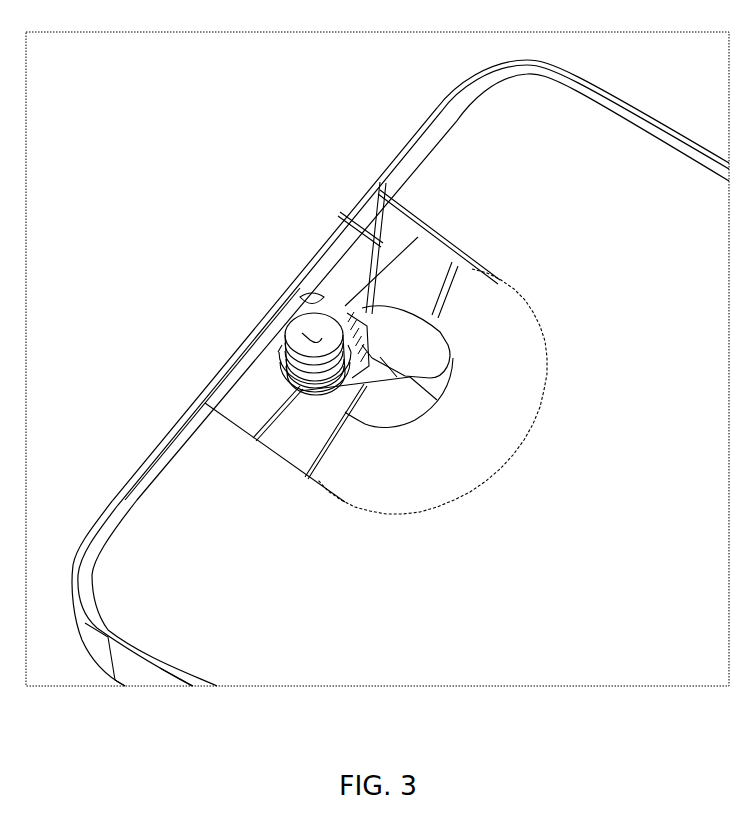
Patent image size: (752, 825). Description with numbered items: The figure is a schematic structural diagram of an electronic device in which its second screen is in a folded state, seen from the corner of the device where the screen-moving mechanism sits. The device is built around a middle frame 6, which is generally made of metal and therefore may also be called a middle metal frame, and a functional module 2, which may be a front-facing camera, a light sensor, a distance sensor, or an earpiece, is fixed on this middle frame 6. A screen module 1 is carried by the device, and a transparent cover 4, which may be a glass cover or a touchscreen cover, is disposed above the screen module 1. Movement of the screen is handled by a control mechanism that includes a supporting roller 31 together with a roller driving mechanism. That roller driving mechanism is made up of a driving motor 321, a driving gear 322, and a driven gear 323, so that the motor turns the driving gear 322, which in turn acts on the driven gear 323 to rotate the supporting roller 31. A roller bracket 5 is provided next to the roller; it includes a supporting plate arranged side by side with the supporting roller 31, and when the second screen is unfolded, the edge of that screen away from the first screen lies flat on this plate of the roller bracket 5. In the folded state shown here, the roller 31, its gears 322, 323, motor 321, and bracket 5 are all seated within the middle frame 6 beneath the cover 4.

The screen module 1 is at (427, 332).
The functional module 2 is at (302, 333).
The supporting roller 31 is at (424, 351).
The driving motor 321 is at (325, 293).
The driving gear 322 is at (307, 293).
The driven gear 323 is at (387, 332).
The transparent cover 4 is at (141, 526).
The roller bracket 5 is at (253, 405).
The middle frame 6 is at (148, 468).